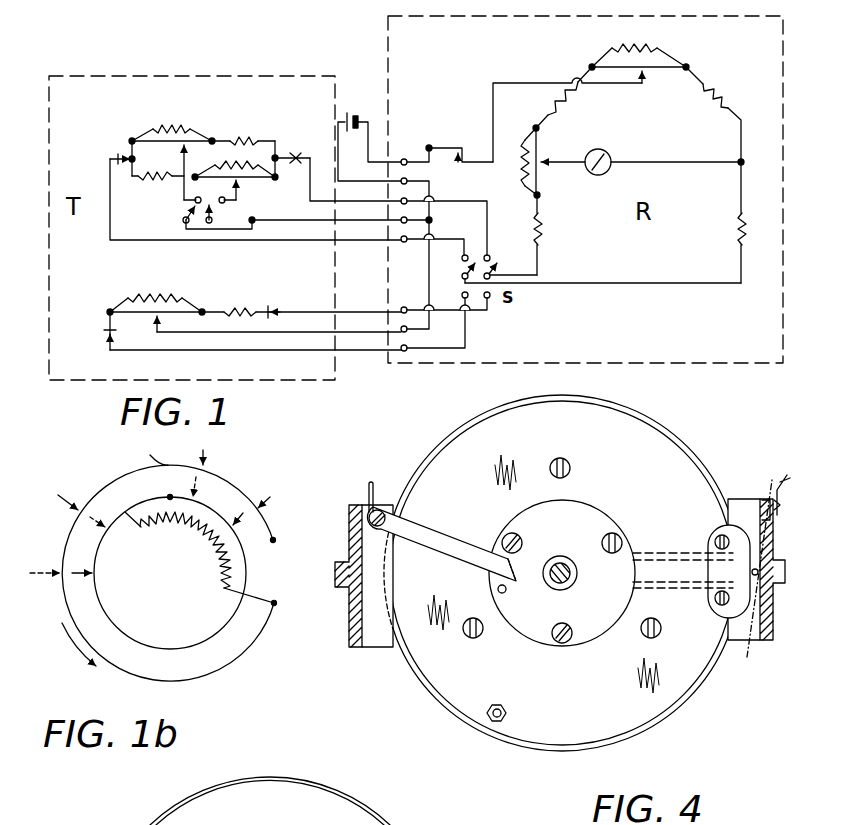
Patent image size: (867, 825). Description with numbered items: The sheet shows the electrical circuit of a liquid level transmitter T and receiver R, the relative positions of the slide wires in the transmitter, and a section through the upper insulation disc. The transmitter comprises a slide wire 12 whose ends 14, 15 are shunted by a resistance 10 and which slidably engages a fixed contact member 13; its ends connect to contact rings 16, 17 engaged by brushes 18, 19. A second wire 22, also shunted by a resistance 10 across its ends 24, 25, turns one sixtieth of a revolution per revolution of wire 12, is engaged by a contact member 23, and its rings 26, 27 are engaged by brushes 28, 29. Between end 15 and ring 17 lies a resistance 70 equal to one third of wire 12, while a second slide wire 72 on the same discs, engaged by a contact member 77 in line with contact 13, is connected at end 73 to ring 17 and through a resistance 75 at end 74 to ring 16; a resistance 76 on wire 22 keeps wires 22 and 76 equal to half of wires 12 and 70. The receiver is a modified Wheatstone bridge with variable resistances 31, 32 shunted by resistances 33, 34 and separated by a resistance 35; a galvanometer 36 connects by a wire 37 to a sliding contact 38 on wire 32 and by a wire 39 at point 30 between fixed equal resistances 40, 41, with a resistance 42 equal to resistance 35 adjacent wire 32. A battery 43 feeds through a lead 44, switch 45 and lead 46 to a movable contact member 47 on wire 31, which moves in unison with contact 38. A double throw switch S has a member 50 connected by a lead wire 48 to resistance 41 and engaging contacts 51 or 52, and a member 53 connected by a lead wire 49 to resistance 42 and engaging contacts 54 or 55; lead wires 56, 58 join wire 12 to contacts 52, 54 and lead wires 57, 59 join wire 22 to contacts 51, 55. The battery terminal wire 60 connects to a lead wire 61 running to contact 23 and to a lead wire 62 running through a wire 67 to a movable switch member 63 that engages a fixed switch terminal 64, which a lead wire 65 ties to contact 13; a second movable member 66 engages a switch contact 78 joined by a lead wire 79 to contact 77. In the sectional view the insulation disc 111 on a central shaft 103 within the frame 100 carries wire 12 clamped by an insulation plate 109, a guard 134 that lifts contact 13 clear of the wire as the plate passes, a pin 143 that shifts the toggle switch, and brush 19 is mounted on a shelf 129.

In FIG. 1, the resistance 10 is at (165, 130).
In FIG. 1, the slide wire 12 is at (160, 145).
In FIG. 1b, the slide wire 12 is at (135, 643).
In FIG. 4, the slide wire 12 is at (708, 680).
In FIG. 1, the contact member 13 is at (182, 158).
In FIG. 1b, the contact member 13 is at (163, 563).
In FIG. 4, the contact member 13 is at (771, 565).
In FIG. 1, the end of slide wire 14 is at (132, 139).
In FIG. 1b, the end of slide wire 14 is at (166, 490).
In FIG. 4, the end of slide wire 14 is at (750, 650).
In FIG. 1, the end of slide wire 15 is at (212, 139).
In FIG. 1b, the end of slide wire 15 is at (129, 512).
In FIG. 4, the end of slide wire 15 is at (775, 492).
In FIG. 1, the contact ring 16 is at (120, 156).
In FIG. 4, the contact ring 16 is at (612, 518).
In FIG. 1, the contact ring 17 is at (292, 156).
In FIG. 1, the brush member 18 is at (116, 158).
In FIG. 4, the brush member 18 is at (427, 523).
In FIG. 1, the brush member 19 is at (299, 156).
In FIG. 1, the second wire 22 is at (144, 318).
In FIG. 1, the contact member 23 is at (160, 320).
In FIG. 1, the end of wire 24 is at (110, 310).
In FIG. 1, the end of wire 25 is at (203, 310).
In FIG. 1, the metal ring 26 is at (106, 332).
In FIG. 1, the metal ring 27 is at (272, 306).
In FIG. 1, the brush 28 is at (108, 338).
In FIG. 1, the brush 29 is at (278, 312).
In FIG. 1, the fixed connection point 30 is at (743, 160).
In FIG. 1, the variable resistance 31 is at (633, 55).
In FIG. 1, the variable resistance 32 is at (537, 147).
In FIG. 1, the resistance 33 is at (616, 50).
In FIG. 1, the resistance 34 is at (522, 166).
In FIG. 1, the resistance 35 is at (550, 100).
In FIG. 1, the galvanometer 36 is at (608, 155).
In FIG. 1, the wire 37 is at (570, 164).
In FIG. 1, the sliding contact 38 is at (545, 160).
In FIG. 1, the wire 39 is at (700, 160).
In FIG. 1, the fixed resistance 40 is at (718, 95).
In FIG. 1, the fixed resistance 41 is at (748, 228).
In FIG. 1, the resistance 42 is at (542, 240).
In FIG. 1, the battery 43 is at (350, 117).
In FIG. 1, the lead 44 is at (400, 160).
In FIG. 1, the switch 45 is at (440, 147).
In FIG. 1, the lead 46 is at (523, 83).
In FIG. 1, the movable contact member 47 is at (648, 74).
In FIG. 1, the lead wire 48 is at (628, 283).
In FIG. 1, the lead wire 49 is at (538, 277).
In FIG. 1, the movable switch member 50 is at (466, 260).
In FIG. 1, the switch contact 51 is at (470, 283).
In FIG. 1, the switch contact 52 is at (467, 255).
In FIG. 1, the movable switch member 53 is at (500, 272).
In FIG. 1, the switch contact 54 is at (535, 197).
In FIG. 1, the switch contact 55 is at (490, 299).
In FIG. 1, the lead wire 56 is at (320, 242).
In FIG. 4, the lead wire 56 is at (374, 482).
In FIG. 1, the lead wire 57 is at (322, 352).
In FIG. 1, the lead wire 58 is at (354, 192).
In FIG. 1, the lead wire 59 is at (315, 314).
In FIG. 1, the terminal wire 60 is at (352, 157).
In FIG. 1, the lead wire 61 is at (234, 334).
In FIG. 1, the lead wire 62 is at (322, 222).
In FIG. 1, the movable switch member 63 is at (186, 224).
In FIG. 1, the fixed switch terminal 64 is at (188, 211).
In FIG. 1, the lead wire 65 is at (190, 205).
In FIG. 4, the lead wire 65 is at (781, 492).
In FIG. 1, the movable switch member 66 is at (210, 224).
In FIG. 1, the wire 67 is at (210, 250).
In FIG. 1, the resistance 70 is at (250, 140).
In FIG. 1b, the resistance 70 is at (195, 540).
In FIG. 1, the slide wire 72 is at (270, 178).
In FIG. 1b, the slide wire 72 is at (150, 680).
In FIG. 1, the end of slide wire 73 is at (277, 178).
In FIG. 1b, the end of slide wire 73 is at (273, 542).
In FIG. 1, the end of slide wire 74 is at (193, 180).
In FIG. 1b, the end of slide wire 74 is at (274, 603).
In FIG. 1, the resistance 75 is at (145, 180).
In FIG. 1b, the resistance 75 is at (226, 580).
In FIG. 1, the resistance 76 is at (238, 309).
In FIG. 1, the contact member 77 is at (233, 186).
In FIG. 1b, the contact member 77 is at (172, 555).
In FIG. 1, the switch contact 78 is at (224, 203).
In FIG. 1, the lead wire 79 is at (226, 200).
In FIG. 4, the frame 100 is at (348, 535).
In FIG. 4, the central shaft 103 is at (563, 555).
In FIG. 4, the insulation plate 109 is at (771, 593).
In FIG. 4, the insulation disc 111 is at (621, 422).
In FIG. 4, the shelf 129 is at (374, 646).
In FIG. 4, the guard 134 is at (716, 532).
In FIG. 4, the pin 143 is at (506, 593).